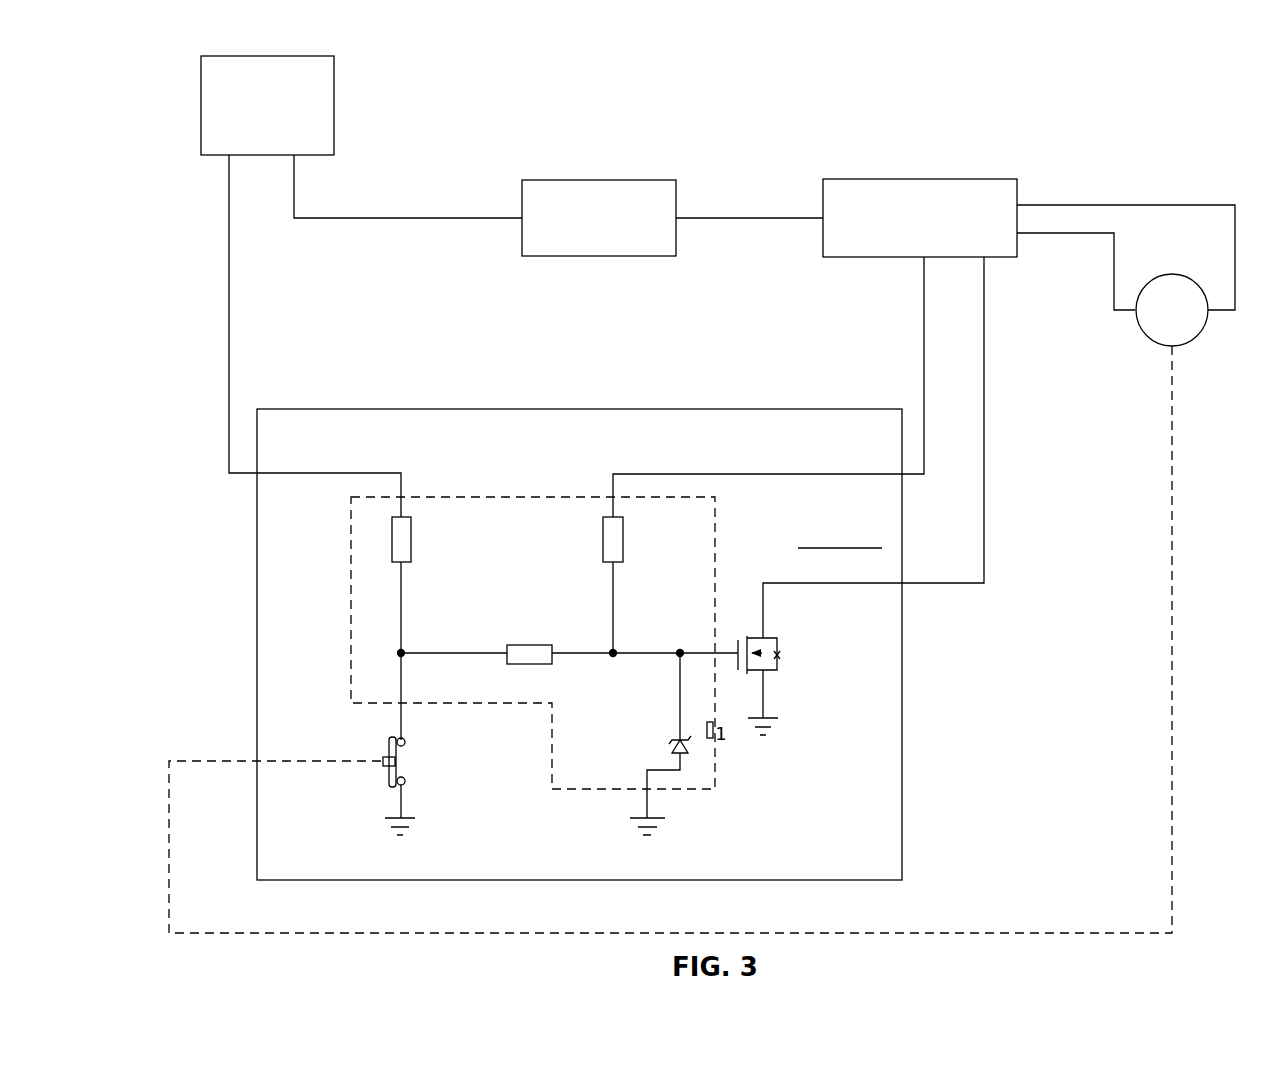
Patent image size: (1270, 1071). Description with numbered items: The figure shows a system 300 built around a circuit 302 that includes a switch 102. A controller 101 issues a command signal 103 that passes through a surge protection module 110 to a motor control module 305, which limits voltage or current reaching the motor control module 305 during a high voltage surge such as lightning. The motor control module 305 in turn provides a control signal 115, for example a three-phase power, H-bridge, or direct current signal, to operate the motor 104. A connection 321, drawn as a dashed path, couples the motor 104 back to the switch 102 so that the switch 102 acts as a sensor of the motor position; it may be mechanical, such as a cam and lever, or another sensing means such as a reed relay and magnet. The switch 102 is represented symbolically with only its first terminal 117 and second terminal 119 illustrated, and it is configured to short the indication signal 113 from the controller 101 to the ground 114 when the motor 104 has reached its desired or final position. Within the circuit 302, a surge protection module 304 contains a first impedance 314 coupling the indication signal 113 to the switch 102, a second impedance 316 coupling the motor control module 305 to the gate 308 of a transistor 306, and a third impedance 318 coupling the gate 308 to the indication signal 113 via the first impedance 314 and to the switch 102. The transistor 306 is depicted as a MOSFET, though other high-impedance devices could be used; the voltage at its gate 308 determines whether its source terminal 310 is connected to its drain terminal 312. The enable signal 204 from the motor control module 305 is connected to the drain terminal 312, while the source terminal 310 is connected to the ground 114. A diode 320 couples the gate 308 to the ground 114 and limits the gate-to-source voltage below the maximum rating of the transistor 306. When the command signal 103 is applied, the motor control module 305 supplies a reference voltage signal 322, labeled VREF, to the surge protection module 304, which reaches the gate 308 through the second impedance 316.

The controller 101 is at (267, 105).
The command signal 103 is at (425, 220).
The surge protection module 110 is at (592, 180).
The system 300 is at (750, 165).
The motor control module 305 is at (922, 179).
The control signal 115 is at (1120, 202).
The motor 104 is at (1138, 327).
The connection 321 is at (1090, 932).
The reference voltage signal 322 is at (843, 480).
The enable signal 204 is at (932, 583).
The circuit 302 is at (287, 405).
The indication signal 113 is at (287, 477).
The surge protection module 304 is at (349, 622).
The first impedance 314 is at (411, 545).
The second impedance 316 is at (603, 547).
The third impedance 318 is at (528, 645).
The gate 308 is at (735, 650).
The drain terminal 312 is at (758, 636).
The transistor 306 is at (786, 673).
The source terminal 310 is at (757, 674).
The ground 114 is at (795, 725).
The diode 320 is at (675, 750).
The switch 102 is at (386, 748).
The first terminal 117 is at (409, 743).
The second terminal 119 is at (409, 782).